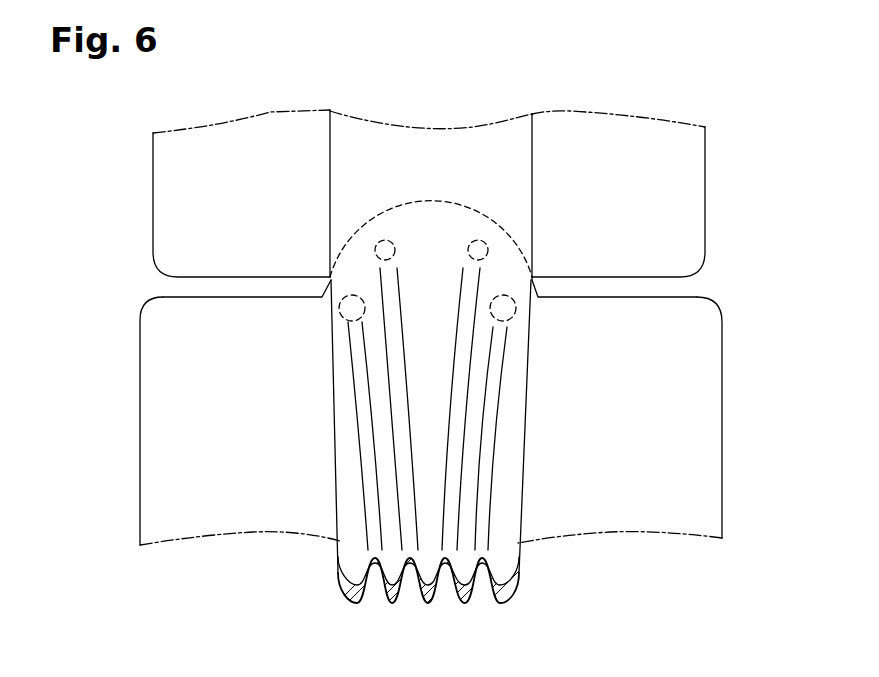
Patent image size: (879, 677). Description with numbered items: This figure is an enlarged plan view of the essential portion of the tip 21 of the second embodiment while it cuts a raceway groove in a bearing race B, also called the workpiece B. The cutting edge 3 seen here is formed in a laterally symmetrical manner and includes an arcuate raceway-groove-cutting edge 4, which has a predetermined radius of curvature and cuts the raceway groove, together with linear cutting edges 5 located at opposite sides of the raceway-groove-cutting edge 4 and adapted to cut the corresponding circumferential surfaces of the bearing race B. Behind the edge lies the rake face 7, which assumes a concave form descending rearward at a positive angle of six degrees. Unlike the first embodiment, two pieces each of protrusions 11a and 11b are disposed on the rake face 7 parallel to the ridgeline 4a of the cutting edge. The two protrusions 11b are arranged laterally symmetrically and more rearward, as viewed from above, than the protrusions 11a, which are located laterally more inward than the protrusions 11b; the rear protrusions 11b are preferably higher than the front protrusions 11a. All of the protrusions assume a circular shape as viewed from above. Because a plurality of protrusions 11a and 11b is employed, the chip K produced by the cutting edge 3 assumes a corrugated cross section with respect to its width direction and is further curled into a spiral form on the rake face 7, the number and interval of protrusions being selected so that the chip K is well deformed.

The tip 21 is at (137, 303).
The bearing race B is at (151, 222).
The cutting edge 3 is at (643, 168).
The raceway-groove-cutting edge 4 is at (498, 227).
The ridgeline of cutting edge 4a is at (367, 228).
The linear cutting edges 5 is at (210, 298).
The rake face 7 is at (672, 442).
The protrusions 11a is at (392, 246).
The protrusions 11b is at (340, 311).
The chip K is at (333, 403).